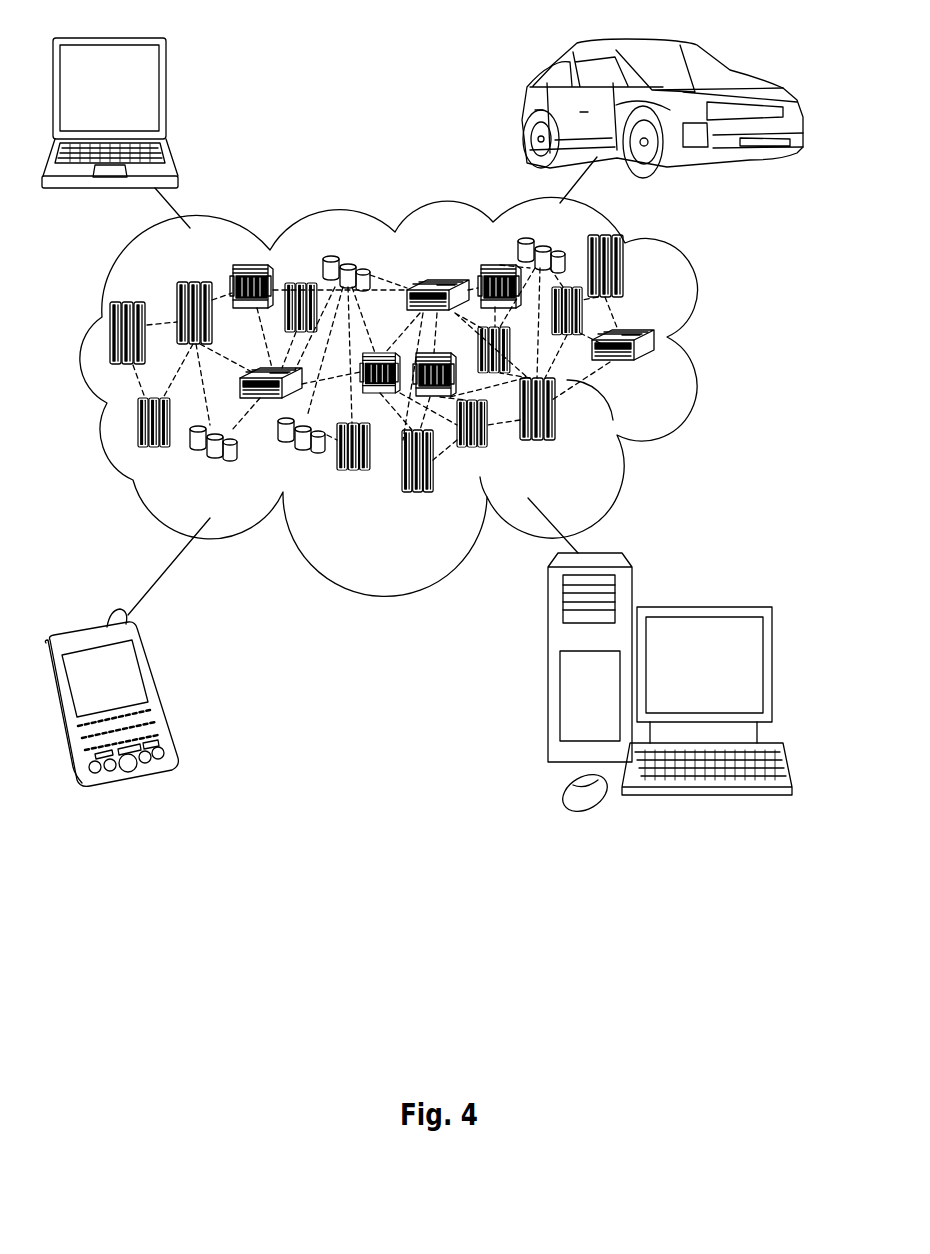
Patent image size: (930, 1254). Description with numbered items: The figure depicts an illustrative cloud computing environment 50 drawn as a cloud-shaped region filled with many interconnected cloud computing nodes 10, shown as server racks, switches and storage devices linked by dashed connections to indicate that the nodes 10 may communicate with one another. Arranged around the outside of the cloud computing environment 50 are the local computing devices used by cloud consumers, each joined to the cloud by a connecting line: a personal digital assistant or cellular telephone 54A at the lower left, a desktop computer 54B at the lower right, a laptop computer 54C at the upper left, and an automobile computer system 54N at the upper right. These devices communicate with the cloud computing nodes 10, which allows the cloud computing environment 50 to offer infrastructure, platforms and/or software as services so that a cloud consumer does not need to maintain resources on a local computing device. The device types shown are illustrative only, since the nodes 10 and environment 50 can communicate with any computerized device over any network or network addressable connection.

The cloud computing nodes 10 is at (418, 396).
The cloud computing environment 50 is at (703, 343).
The personal digital assistant or cellular telephone 54A is at (160, 690).
The desktop computer 54B is at (700, 607).
The laptop computer 54C is at (166, 98).
The automobile computer system 54N is at (522, 110).